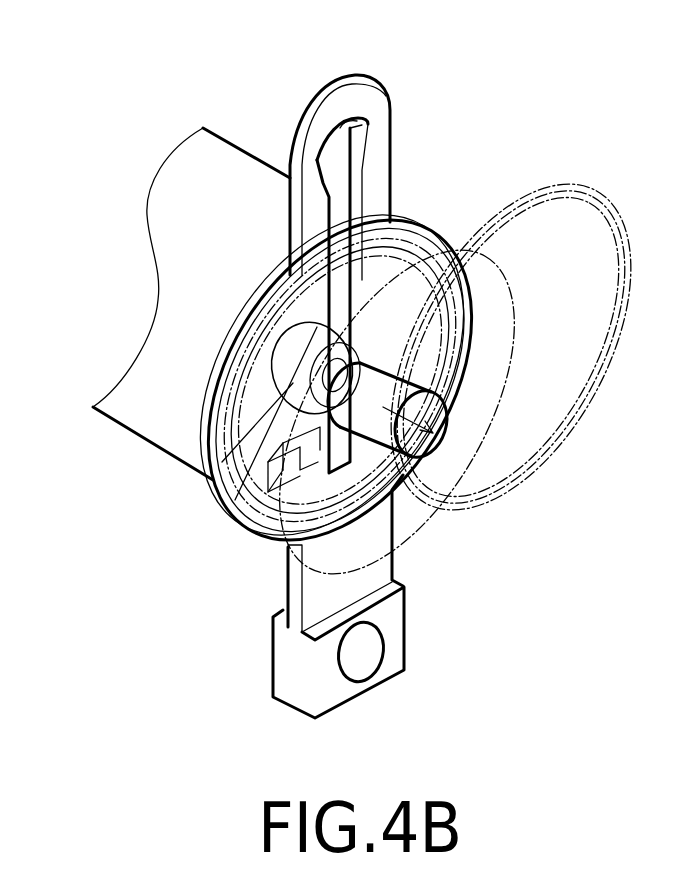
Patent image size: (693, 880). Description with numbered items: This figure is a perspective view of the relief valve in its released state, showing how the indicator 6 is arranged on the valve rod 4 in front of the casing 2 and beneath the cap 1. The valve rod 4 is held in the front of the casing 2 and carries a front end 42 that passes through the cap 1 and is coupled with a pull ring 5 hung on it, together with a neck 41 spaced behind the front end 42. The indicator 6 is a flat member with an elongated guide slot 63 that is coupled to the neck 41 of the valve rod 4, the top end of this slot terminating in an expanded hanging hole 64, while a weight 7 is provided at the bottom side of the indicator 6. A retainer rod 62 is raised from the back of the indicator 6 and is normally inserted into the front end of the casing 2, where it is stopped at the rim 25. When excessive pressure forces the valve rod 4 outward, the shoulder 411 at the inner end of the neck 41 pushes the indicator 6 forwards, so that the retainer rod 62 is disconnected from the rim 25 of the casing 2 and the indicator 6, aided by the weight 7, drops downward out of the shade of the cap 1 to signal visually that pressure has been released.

The cap 1 is at (422, 520).
The casing 2 is at (180, 307).
The valve rod 4 is at (300, 385).
The pull ring 5 is at (587, 407).
The indicator 6 is at (363, 95).
The weight 7 is at (397, 645).
The rim 25 is at (290, 440).
The neck 41 is at (360, 357).
The front end 42 is at (433, 400).
The retainer rod 62 is at (270, 480).
The elongated guide slot 63 is at (357, 200).
The expanded hanging hole 64 is at (350, 138).
The shoulder 411 is at (300, 420).